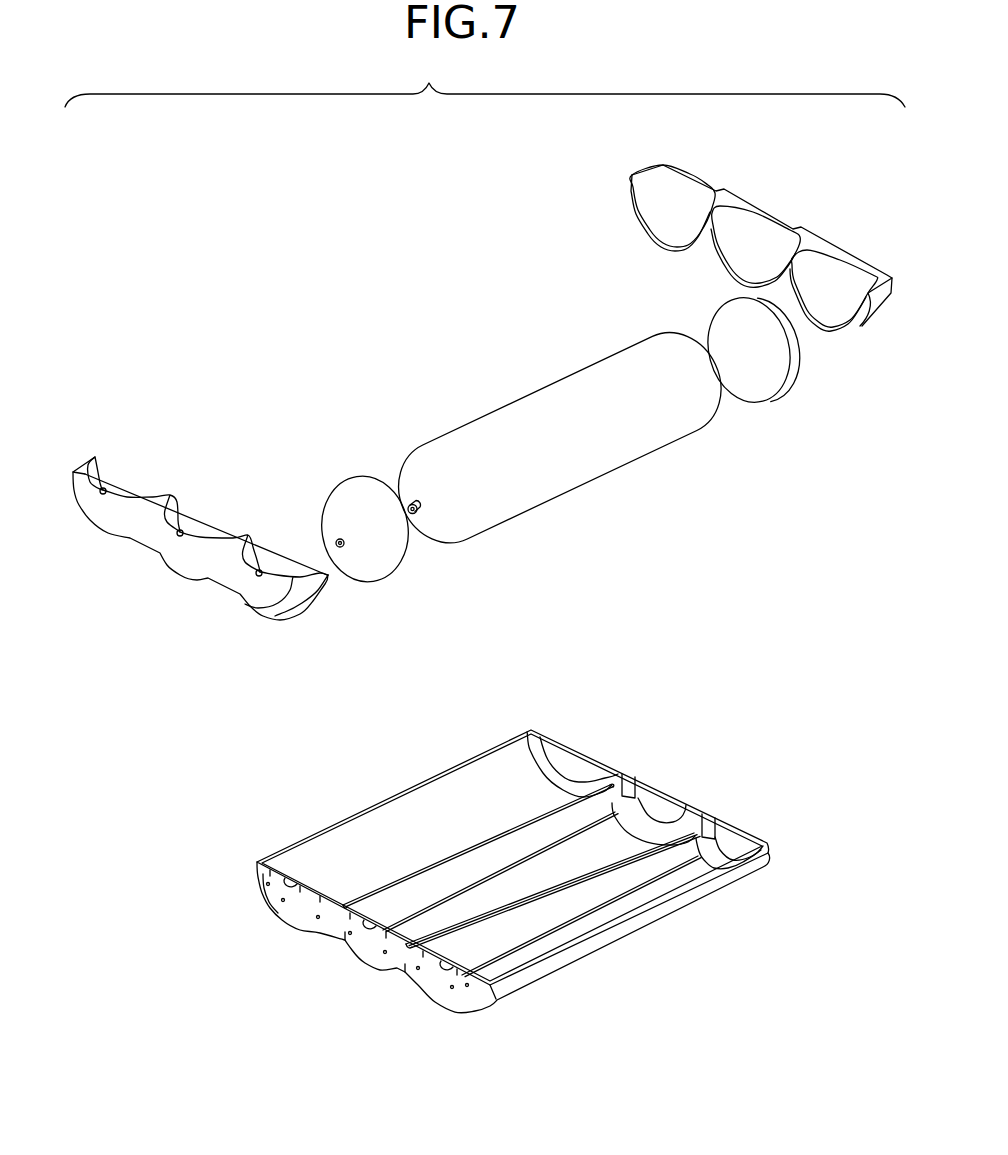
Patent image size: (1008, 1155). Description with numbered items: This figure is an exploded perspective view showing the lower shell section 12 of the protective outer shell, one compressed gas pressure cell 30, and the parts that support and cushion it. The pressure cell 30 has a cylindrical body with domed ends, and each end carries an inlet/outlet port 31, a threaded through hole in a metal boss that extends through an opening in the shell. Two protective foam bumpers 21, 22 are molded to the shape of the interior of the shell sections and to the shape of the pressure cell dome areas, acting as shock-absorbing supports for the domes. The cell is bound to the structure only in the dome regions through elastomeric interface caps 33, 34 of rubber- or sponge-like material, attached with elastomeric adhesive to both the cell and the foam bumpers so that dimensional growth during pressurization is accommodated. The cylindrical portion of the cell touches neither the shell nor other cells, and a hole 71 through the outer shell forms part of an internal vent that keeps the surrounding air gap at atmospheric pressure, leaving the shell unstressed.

The lower shell section 12 is at (619, 952).
The protective foam bumper 21 is at (216, 570).
The protective foam bumper 22 is at (636, 170).
The compressed gas pressure cell 30 is at (543, 513).
The inlet/outlet port 31 is at (417, 495).
The elastomeric interface cap 33 is at (400, 585).
The elastomeric interface cap 34 is at (792, 397).
The hole 71 is at (223, 566).